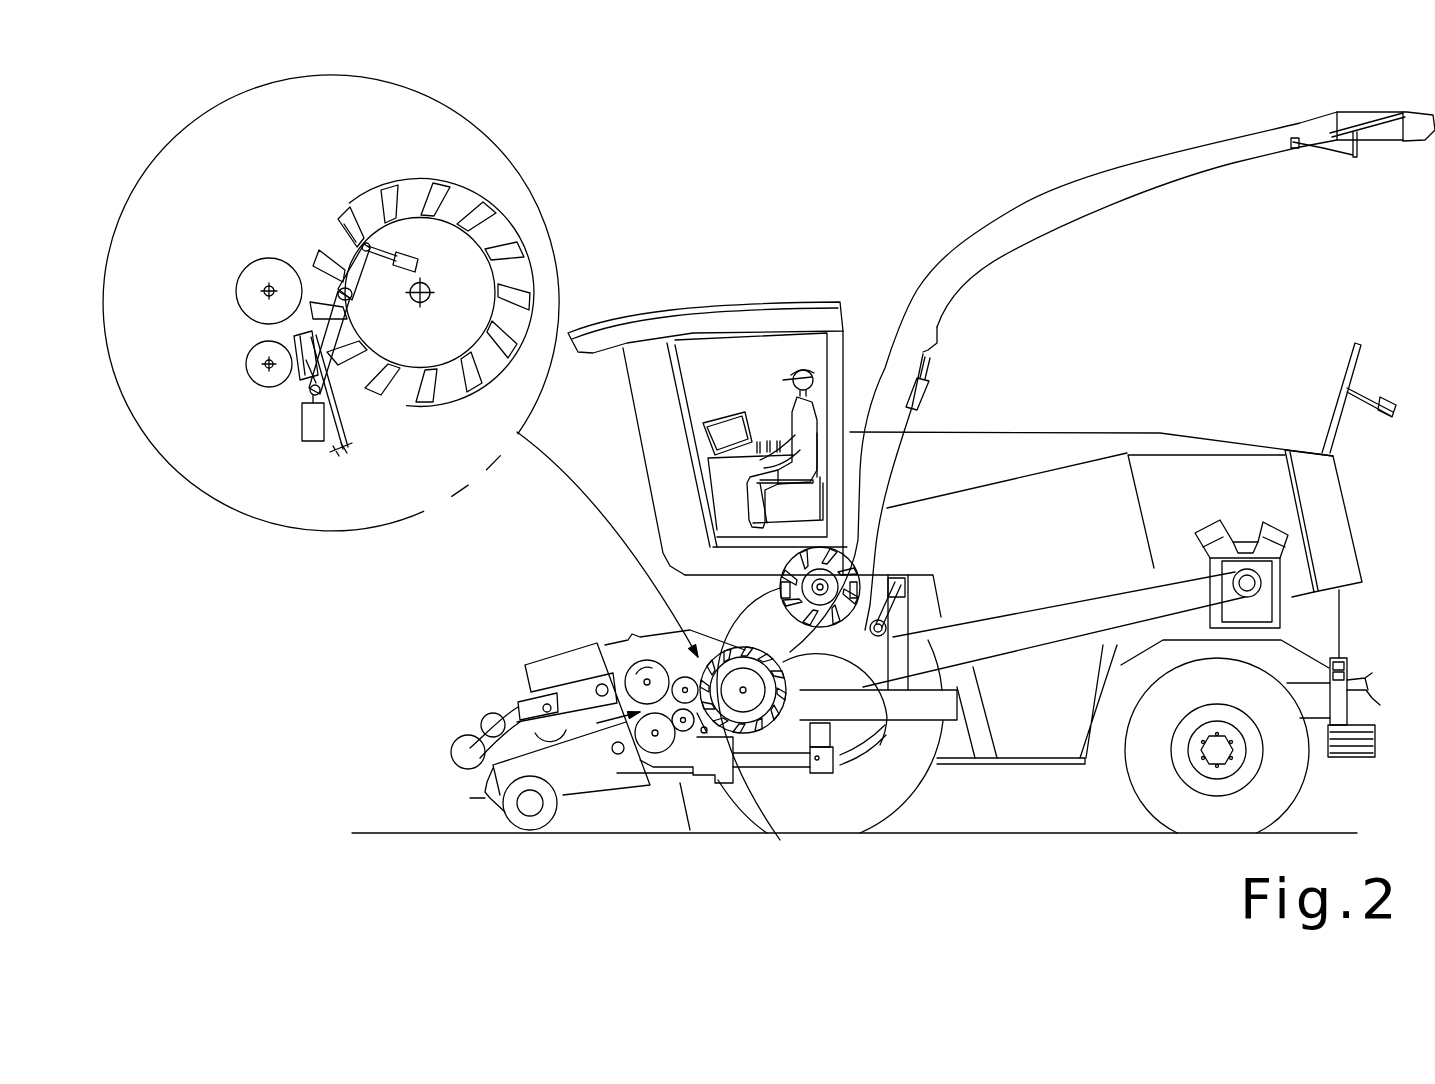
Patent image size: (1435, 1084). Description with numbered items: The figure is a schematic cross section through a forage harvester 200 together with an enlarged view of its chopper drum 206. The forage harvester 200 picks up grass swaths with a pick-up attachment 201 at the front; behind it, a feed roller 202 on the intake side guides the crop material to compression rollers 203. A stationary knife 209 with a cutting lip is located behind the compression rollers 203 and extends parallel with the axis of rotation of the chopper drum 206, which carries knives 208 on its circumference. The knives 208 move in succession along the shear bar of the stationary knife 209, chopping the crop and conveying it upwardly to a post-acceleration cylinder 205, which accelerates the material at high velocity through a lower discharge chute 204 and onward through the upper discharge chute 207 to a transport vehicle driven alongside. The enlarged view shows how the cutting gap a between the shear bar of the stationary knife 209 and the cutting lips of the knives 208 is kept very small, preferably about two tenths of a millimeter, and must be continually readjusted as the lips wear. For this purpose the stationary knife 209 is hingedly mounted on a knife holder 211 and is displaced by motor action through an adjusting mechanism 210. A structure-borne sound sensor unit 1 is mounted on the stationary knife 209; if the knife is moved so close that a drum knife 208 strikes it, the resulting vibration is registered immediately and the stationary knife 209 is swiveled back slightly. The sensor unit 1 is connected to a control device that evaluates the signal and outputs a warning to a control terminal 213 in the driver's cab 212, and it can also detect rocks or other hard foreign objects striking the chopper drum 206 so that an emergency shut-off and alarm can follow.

The forage harvester 200 is at (668, 248).
The pick-up attachment 201 is at (483, 690).
The feed roller 202 is at (620, 668).
The compression rollers 203 is at (688, 652).
The lower discharge chute 204 is at (893, 473).
The post-acceleration cylinder 205 is at (857, 560).
The chopper drum 206 is at (741, 722).
The upper discharge chute 207 is at (1057, 207).
The knives 208 is at (337, 226).
The stationary knife 209 is at (248, 360).
The adjusting mechanism 210 is at (352, 319).
The knife holder 211 is at (294, 381).
The driver's cab 212 is at (773, 318).
The control terminal 213 is at (703, 430).
The structure-borne sound sensor unit 1 is at (302, 360).
The cutting gap a is at (352, 439).